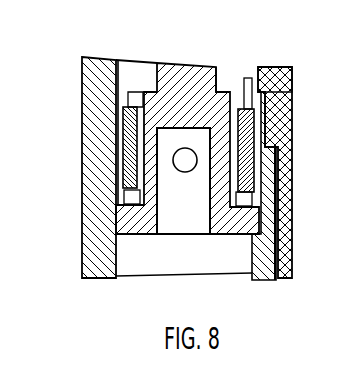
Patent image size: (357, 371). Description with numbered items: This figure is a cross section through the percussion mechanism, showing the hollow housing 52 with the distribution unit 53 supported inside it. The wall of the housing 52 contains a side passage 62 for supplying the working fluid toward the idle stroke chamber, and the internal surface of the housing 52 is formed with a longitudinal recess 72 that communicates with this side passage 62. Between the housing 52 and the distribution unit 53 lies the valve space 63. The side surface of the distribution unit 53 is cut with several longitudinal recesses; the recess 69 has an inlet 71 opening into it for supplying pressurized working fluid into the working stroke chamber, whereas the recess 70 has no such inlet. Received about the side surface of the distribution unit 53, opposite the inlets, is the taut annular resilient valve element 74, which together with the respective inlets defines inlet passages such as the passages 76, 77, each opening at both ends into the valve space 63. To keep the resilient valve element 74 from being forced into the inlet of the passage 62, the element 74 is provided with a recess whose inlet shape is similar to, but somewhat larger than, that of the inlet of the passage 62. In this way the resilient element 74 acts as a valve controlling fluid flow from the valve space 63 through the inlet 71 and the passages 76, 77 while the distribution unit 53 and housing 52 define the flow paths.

The hollow housing 52 is at (92, 250).
The distribution unit 53 is at (230, 80).
The side passage 62 is at (278, 244).
The valve space 63 is at (133, 73).
The longitudinal recess 69 is at (117, 88).
The longitudinal recess 70 is at (236, 95).
The inlet 71 is at (128, 150).
The longitudinal recess 72 is at (254, 86).
The resilient valve element 74 is at (157, 150).
The inlet passage 76 is at (128, 200).
The inlet passage 77 is at (284, 103).